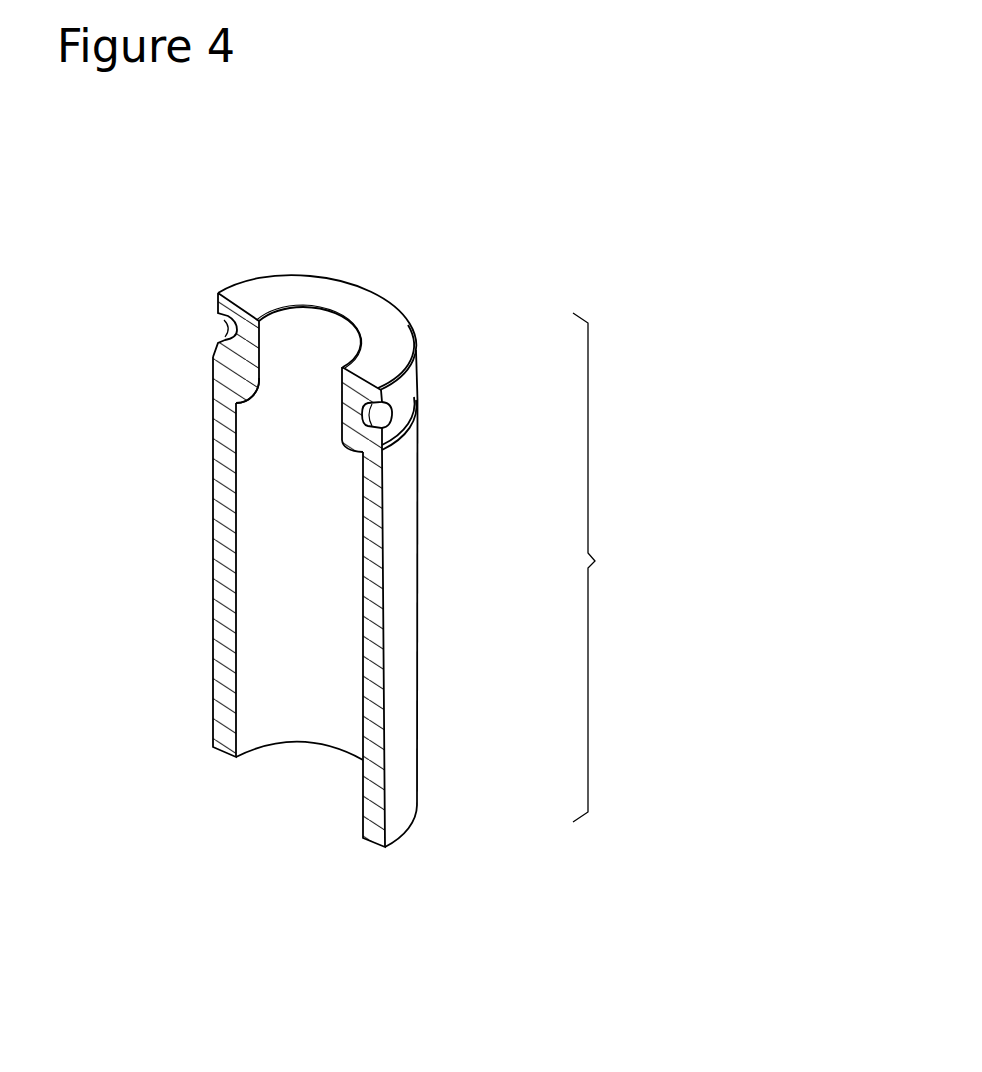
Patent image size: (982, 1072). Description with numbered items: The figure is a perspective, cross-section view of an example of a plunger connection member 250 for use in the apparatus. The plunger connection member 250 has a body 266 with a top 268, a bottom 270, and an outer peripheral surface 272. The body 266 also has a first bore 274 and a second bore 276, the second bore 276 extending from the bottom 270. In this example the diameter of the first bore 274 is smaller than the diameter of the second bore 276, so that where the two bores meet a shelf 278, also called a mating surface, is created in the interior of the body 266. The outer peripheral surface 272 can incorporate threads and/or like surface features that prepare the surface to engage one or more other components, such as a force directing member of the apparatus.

The plunger connection member 250 is at (585, 247).
The body 266 is at (607, 567).
The top 268 is at (395, 262).
The bottom 270 is at (410, 867).
The outer peripheral surface 272 is at (402, 608).
The first bore 274 is at (295, 345).
The second bore 276 is at (305, 763).
The shelf 278 is at (238, 413).